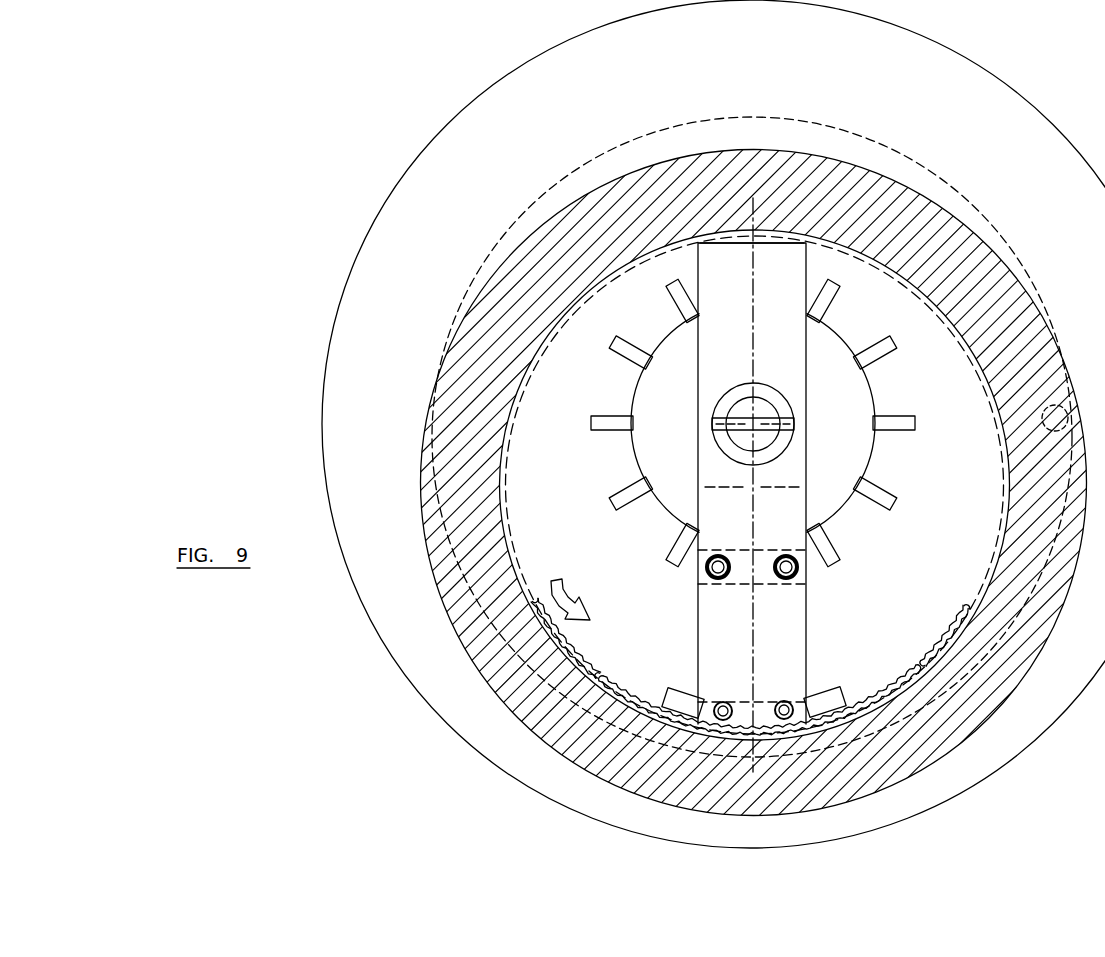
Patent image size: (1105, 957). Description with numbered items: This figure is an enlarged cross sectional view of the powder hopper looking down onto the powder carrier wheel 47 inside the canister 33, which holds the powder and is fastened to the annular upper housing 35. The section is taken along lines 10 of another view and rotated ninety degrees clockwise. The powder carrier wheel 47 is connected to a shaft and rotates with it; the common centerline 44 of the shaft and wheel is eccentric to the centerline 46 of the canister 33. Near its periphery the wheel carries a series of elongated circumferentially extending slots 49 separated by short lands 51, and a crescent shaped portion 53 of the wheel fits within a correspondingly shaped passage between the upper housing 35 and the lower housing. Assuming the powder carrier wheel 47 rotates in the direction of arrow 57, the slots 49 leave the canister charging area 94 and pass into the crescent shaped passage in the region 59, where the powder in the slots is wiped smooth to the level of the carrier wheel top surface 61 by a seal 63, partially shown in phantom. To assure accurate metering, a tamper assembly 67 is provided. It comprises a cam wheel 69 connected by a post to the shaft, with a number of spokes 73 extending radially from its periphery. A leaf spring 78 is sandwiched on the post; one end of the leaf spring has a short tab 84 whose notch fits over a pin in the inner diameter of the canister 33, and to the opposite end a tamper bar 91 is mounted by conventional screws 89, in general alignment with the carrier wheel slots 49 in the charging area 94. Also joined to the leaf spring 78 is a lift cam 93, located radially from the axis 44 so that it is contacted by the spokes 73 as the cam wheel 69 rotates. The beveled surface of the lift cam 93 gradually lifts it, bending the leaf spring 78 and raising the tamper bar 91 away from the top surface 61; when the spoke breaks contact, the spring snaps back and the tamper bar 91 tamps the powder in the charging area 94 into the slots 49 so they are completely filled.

The section view direction indicator 10 is at (788, 488).
The canister 33 is at (552, 485).
The upper housing 35 is at (659, 424).
The centerline 44 is at (758, 432).
The centerline 46 is at (754, 506).
The powder carrier wheel 47 is at (558, 504).
The slots 49 is at (717, 730).
The lands 51 is at (761, 653).
The crescent shaped portion 53 is at (645, 135).
The arrow 57 is at (592, 584).
The region 59 is at (755, 485).
The carrier wheel top surface 61 is at (574, 394).
The seal 63 is at (517, 403).
The tamper assembly 67 is at (712, 483).
The cam wheel 69 is at (838, 455).
The spokes 73 is at (777, 423).
The leaf spring 78 is at (780, 637).
The short tab 84 is at (789, 267).
The screws 89 is at (790, 686).
The tamper bar 91 is at (673, 684).
The lift cam 93 is at (779, 582).
The canister charging area 94 is at (870, 640).